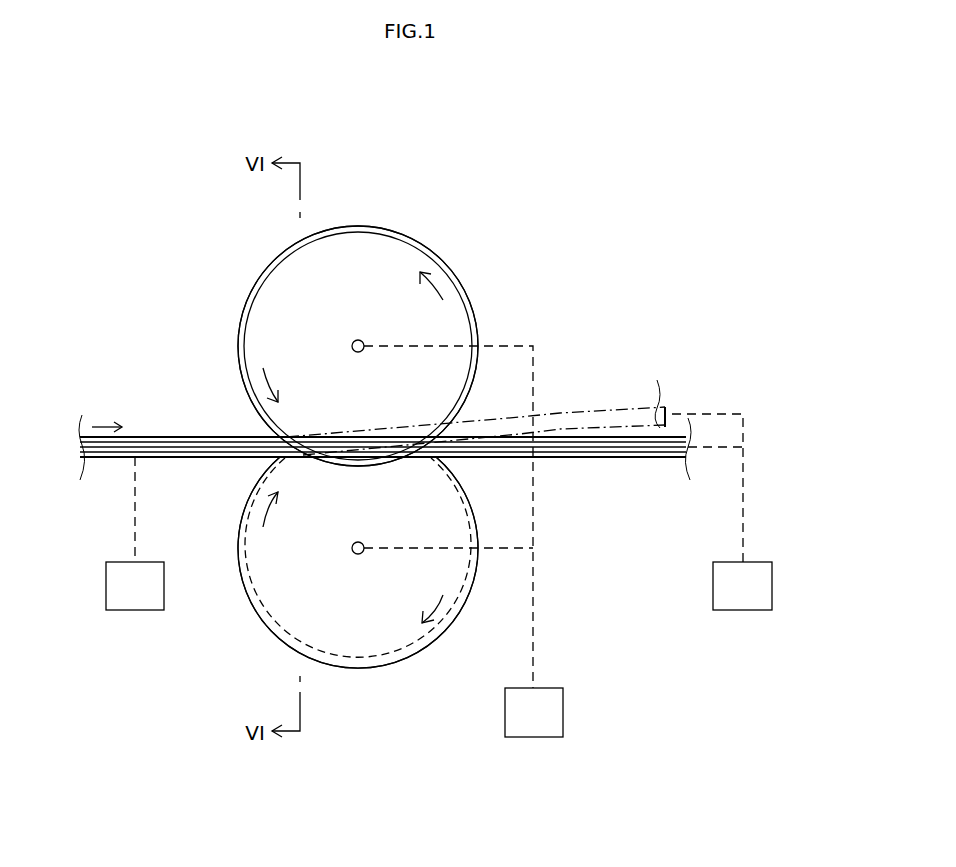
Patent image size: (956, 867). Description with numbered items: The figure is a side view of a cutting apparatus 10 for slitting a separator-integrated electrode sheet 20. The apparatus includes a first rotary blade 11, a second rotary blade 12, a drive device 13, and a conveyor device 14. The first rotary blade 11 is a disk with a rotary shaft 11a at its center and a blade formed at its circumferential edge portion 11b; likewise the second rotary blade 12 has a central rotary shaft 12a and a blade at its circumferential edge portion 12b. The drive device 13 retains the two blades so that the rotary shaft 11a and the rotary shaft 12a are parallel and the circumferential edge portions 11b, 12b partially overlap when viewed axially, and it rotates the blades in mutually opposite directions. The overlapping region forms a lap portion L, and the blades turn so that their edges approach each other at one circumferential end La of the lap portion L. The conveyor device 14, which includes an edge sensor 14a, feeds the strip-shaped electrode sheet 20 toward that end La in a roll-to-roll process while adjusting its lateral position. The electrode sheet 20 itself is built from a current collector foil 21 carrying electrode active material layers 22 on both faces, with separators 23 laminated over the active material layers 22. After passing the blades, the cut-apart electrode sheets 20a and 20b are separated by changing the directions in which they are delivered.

The cutting apparatus 10 is at (145, 240).
The first rotary blade 11 is at (374, 244).
The rotary shaft 11a is at (364, 339).
The circumferential edge portion 11b is at (455, 277).
The second rotary blade 12 is at (283, 615).
The rotary shaft 12a is at (362, 556).
The circumferential edge portion 12b is at (375, 672).
The drive device 13 is at (548, 688).
The conveyor device 14 is at (756, 562).
The edge sensor 14a is at (125, 610).
The electrode sheet 20 is at (145, 428).
The electrode sheet 20a is at (660, 458).
The electrode sheet 20b is at (600, 408).
The current collector foil 21 is at (240, 447).
The electrode active material layer 22 is at (180, 437).
The separator 23 is at (208, 437).
The lap portion L is at (315, 466).
The circumferential end of lap portion La is at (292, 420).